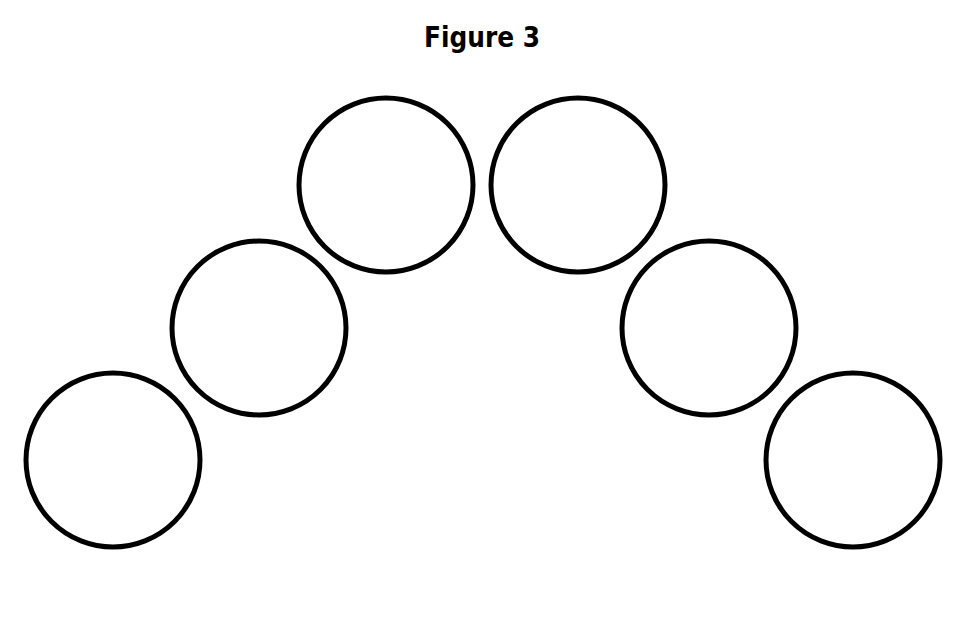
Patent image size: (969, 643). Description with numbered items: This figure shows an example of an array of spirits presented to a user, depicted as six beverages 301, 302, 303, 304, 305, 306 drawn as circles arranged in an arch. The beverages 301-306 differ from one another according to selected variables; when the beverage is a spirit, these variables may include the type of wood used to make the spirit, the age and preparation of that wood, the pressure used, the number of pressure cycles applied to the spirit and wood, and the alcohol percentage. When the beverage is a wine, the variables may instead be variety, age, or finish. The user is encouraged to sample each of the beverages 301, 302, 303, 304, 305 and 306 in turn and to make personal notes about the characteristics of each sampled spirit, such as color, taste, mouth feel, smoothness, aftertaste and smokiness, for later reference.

The beverage 301 is at (196, 524).
The beverage 302 is at (168, 295).
The beverage 303 is at (290, 195).
The beverage 304 is at (684, 190).
The beverage 305 is at (810, 313).
The beverage 306 is at (766, 516).